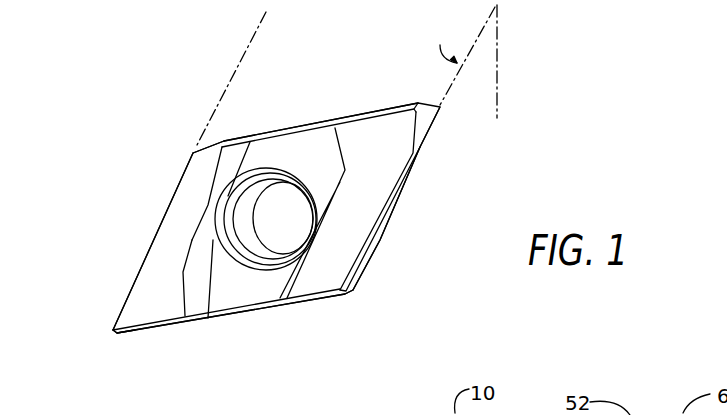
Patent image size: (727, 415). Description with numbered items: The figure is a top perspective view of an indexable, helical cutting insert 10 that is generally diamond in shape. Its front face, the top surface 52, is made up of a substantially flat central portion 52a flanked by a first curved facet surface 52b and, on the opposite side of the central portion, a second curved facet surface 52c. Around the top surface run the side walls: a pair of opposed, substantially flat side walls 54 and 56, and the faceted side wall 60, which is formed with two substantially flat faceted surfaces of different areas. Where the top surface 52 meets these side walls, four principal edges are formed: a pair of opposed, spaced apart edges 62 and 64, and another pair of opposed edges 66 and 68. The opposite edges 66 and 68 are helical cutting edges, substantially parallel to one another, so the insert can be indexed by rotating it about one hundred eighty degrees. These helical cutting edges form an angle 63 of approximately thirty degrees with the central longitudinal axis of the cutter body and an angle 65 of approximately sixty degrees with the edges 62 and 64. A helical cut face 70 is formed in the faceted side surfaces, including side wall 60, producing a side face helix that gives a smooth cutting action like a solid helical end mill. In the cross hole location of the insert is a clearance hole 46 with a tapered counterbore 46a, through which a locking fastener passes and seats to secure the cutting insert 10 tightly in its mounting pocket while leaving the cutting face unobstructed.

The cutting insert 10 is at (625, 77).
The clearance hole 46 is at (277, 200).
The tapered counterbore 46a is at (208, 318).
The top surface 52 is at (305, 143).
The central portion 52a is at (200, 290).
The first curved facet surface 52b is at (400, 125).
The second curved facet surface 52c is at (136, 280).
The side wall 54 is at (358, 112).
The side wall 56 is at (262, 319).
The side wall 60 is at (390, 228).
The edge 62 is at (335, 126).
The angle 63 is at (500, 76).
The edge 64 is at (315, 296).
The angle 65 is at (258, 133).
The helical cutting edge 66 is at (410, 170).
The helical cutting edge 68 is at (151, 243).
The helical cut face 70 is at (360, 270).